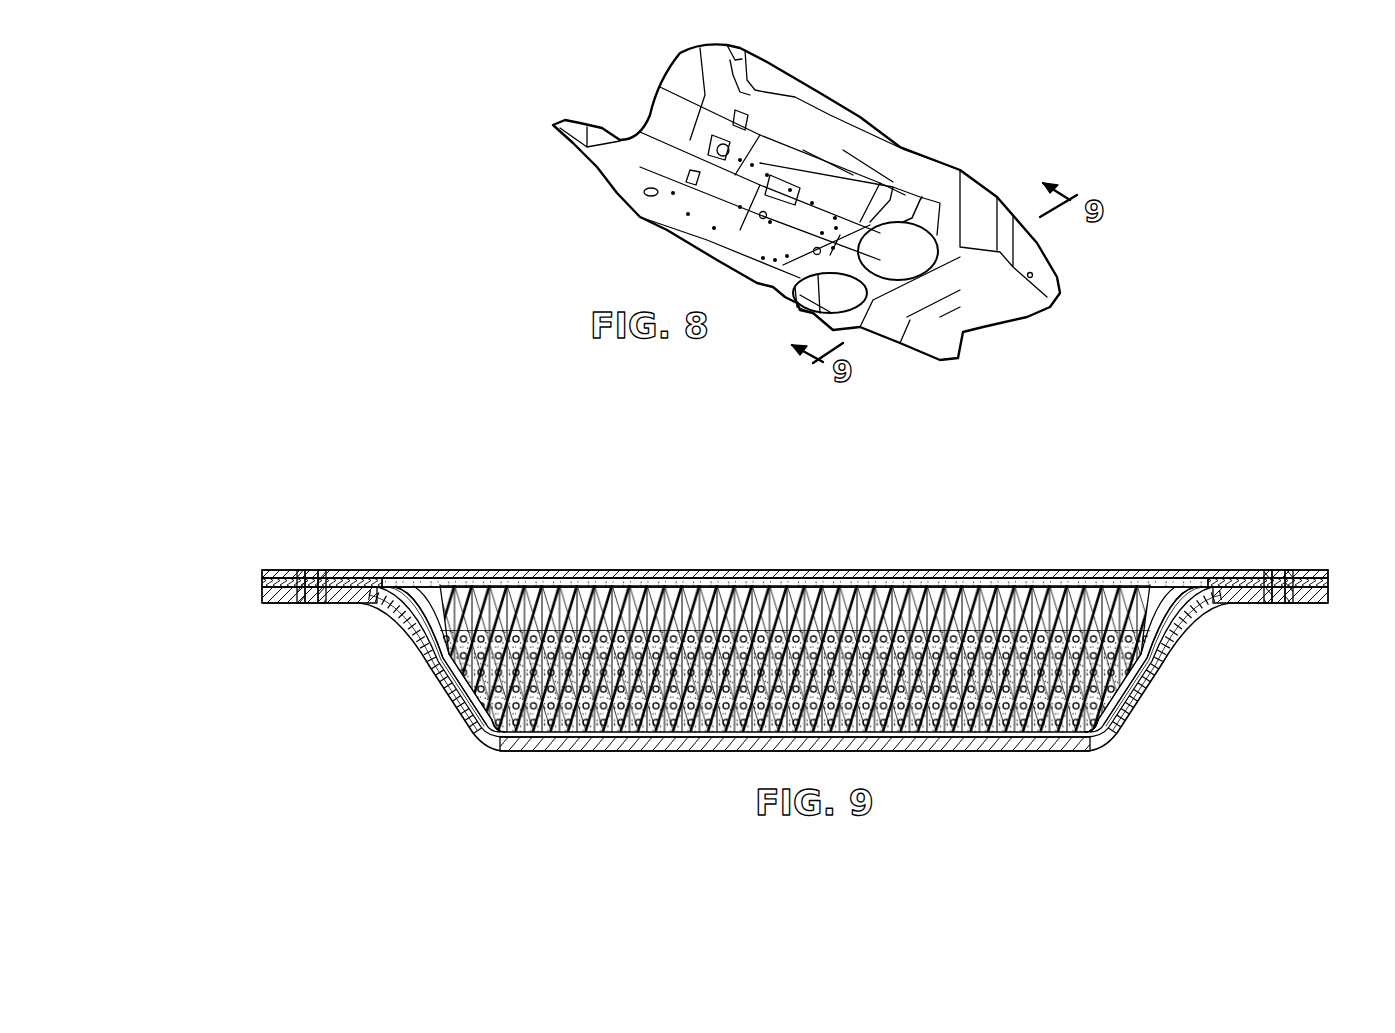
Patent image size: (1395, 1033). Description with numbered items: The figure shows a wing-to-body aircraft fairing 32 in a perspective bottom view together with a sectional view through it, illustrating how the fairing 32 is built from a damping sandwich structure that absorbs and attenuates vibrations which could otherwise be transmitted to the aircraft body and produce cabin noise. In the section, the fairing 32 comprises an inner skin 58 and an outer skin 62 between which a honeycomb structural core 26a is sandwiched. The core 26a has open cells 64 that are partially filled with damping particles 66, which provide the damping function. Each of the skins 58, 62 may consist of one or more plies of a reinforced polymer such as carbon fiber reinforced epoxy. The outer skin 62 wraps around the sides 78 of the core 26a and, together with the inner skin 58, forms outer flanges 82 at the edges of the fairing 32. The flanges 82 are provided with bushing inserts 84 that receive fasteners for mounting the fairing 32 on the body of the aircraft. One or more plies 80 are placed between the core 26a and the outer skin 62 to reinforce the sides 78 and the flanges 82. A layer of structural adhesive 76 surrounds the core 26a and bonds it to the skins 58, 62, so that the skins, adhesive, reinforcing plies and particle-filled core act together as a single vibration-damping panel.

In FIG. 8, the wing-to-body aircraft fairing 32 is at (950, 115).
In FIG. 9, the wing-to-body aircraft fairing 32 is at (772, 611).
In FIG. 9, the honeycomb structural core 26a is at (672, 600).
In FIG. 9, the inner skin 58 is at (535, 575).
In FIG. 9, the outer skin 62 is at (698, 743).
In FIG. 9, the open cells 64 is at (997, 607).
In FIG. 9, the damping particles 66 is at (1090, 730).
In FIG. 9, the layer of structural adhesive 76 is at (835, 580).
In FIG. 9, the sides of the core 78 is at (413, 655).
In FIG. 9, the plies 80 is at (460, 705).
In FIG. 9, the outer flanges 82 is at (270, 582).
In FIG. 9, the bushing inserts 84 is at (312, 570).